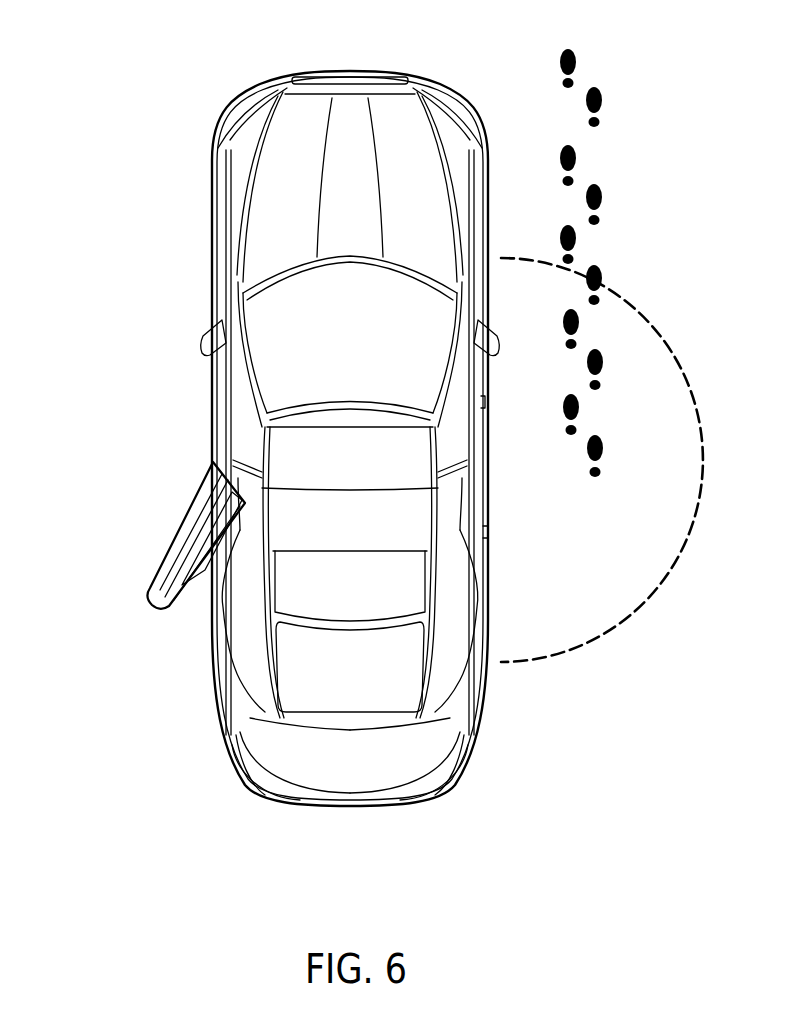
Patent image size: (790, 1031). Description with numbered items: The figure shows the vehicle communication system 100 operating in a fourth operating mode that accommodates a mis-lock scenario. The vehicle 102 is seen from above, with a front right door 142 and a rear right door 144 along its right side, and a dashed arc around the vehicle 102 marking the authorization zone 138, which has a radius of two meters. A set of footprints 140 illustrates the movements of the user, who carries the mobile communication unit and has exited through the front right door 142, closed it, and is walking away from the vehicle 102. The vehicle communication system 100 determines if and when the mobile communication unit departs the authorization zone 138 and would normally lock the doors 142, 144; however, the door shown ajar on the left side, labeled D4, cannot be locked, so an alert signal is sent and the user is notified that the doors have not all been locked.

The vehicle communication system 100 is at (160, 63).
The vehicle 102 is at (277, 214).
The vehicle door D4 is at (198, 532).
The authorization zone 138 is at (593, 633).
The set of footprints 140 is at (577, 60).
The front right door 142 is at (483, 402).
The rear right door 144 is at (487, 532).